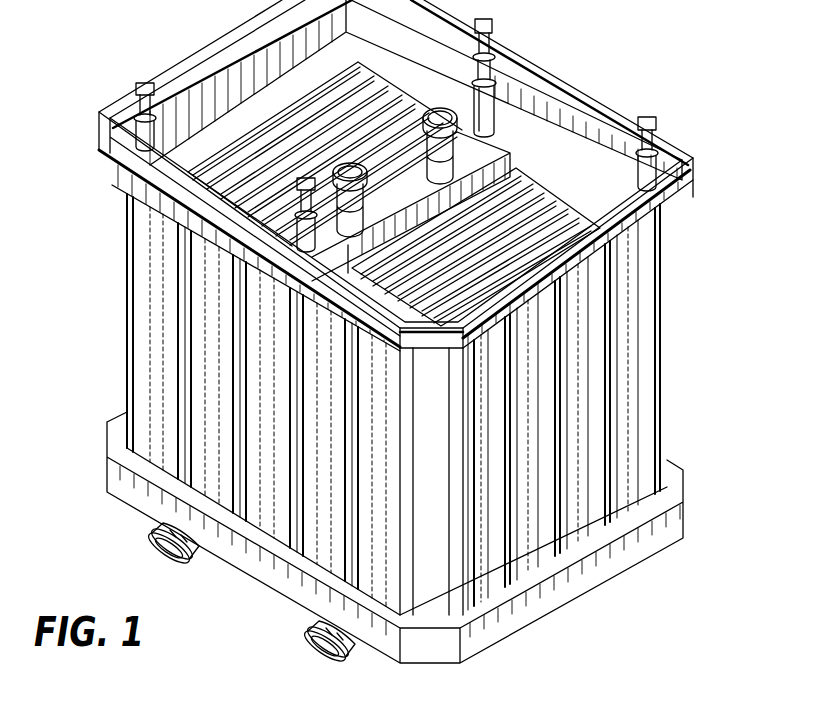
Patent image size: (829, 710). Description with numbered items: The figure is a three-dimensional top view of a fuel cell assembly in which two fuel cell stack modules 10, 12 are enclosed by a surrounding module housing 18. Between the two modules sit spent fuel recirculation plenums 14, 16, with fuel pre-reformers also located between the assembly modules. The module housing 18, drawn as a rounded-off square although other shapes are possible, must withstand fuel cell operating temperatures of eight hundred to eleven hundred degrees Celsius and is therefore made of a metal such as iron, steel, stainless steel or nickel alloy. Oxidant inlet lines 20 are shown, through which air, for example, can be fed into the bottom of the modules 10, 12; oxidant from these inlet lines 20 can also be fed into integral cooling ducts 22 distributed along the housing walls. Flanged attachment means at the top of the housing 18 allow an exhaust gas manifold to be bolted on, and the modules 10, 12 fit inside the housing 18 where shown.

The fuel cell stack module 10 is at (393, 93).
The fuel cell stack module 12 is at (557, 192).
The spent fuel recirculation plenum 14 is at (464, 158).
The spent fuel recirculation plenum 16 is at (340, 237).
The module housing 18 is at (637, 335).
The oxidant inlet lines 20 is at (320, 656).
The cooling ducts 22 is at (395, 561).